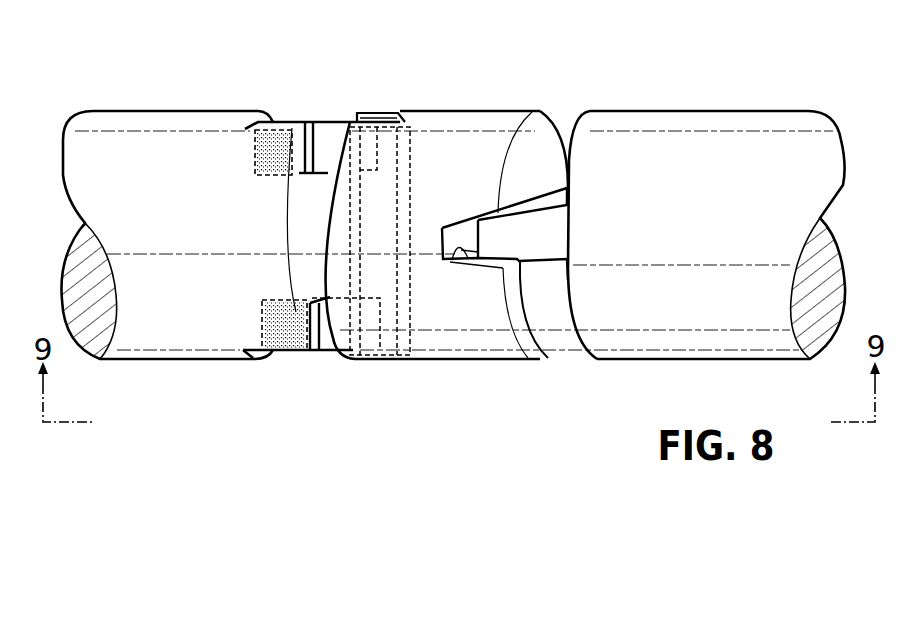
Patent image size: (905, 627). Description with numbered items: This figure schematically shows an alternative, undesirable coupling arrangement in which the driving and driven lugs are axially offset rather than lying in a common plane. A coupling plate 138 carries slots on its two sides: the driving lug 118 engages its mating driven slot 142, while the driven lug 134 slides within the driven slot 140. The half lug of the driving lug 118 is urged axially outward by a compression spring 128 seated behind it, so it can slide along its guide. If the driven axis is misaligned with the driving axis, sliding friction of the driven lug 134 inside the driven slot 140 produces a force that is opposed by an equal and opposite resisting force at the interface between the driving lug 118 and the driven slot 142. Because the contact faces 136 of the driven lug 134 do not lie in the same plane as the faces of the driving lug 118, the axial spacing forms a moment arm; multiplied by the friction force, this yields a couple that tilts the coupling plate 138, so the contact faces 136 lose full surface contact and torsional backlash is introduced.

The driving lug 118 is at (310, 120).
The compression spring 128 is at (255, 152).
The driven lug 134 is at (507, 237).
The contact faces of the driven lug 136 is at (545, 327).
The coupling plate 138 is at (529, 101).
The driven slot 140 is at (450, 262).
The driven slot mating with the driving lug 142 is at (393, 113).